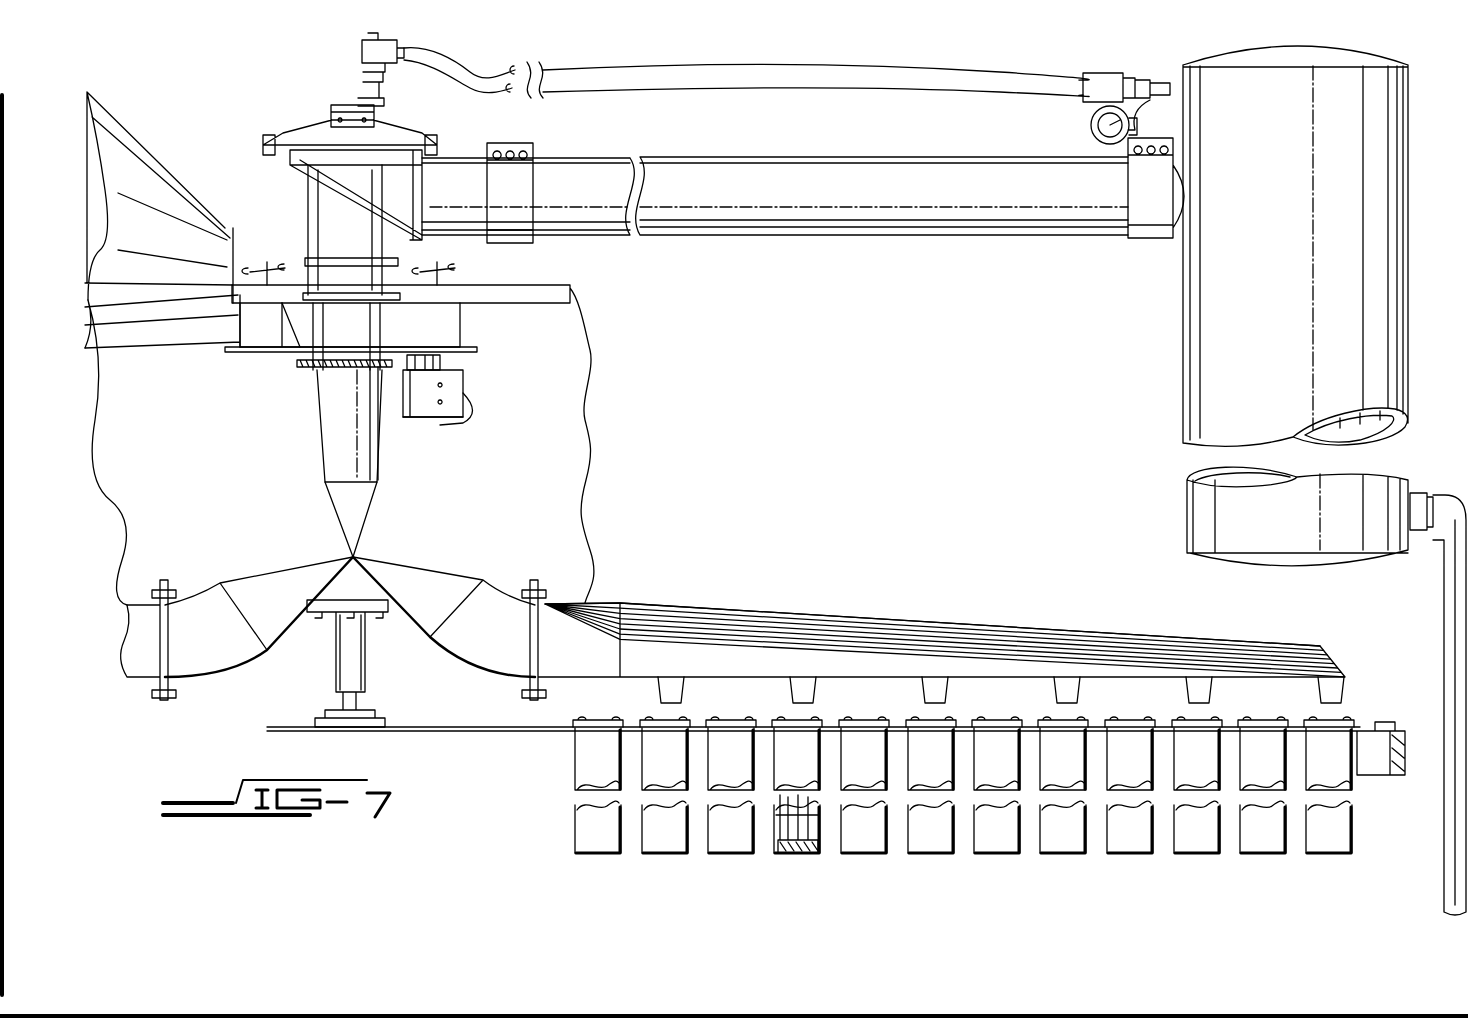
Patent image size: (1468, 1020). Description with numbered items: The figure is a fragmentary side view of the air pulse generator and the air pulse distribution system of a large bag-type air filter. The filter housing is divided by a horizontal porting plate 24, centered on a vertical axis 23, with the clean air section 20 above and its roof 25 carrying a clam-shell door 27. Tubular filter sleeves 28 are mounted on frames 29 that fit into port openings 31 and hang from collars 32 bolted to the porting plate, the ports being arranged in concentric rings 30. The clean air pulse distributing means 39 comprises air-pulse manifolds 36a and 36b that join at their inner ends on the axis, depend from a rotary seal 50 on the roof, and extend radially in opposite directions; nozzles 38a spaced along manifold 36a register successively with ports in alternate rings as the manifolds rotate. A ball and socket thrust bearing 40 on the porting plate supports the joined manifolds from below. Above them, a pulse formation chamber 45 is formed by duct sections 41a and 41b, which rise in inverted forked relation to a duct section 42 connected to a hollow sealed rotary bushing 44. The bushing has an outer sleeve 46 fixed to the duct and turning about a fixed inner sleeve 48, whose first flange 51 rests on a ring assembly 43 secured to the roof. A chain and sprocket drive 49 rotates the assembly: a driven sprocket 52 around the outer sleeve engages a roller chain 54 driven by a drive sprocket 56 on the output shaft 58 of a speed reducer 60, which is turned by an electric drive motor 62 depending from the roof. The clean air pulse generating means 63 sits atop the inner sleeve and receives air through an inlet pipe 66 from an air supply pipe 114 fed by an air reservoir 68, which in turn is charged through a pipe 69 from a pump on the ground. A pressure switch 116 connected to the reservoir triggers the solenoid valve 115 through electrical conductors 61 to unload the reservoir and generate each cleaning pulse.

The clean air section 20 is at (768, 520).
The axis 23 is at (360, 50).
The porting plate 24 is at (470, 725).
The roof 25 is at (560, 288).
The clam-shell door 27 is at (150, 180).
The filter sleeves 28 is at (778, 835).
The frame 29 is at (815, 838).
The rings 30 is at (1080, 713).
The port openings 31 is at (594, 720).
The collars 32 is at (818, 720).
The air-pulse manifold 36a is at (598, 603).
The air-pulse manifold 36b is at (150, 598).
The nozzles 38a is at (684, 695).
The clean air pulse distributing means 39 is at (835, 515).
The ball and socket thrust bearing 40 is at (327, 693).
The duct section 41a is at (415, 505).
The duct section 41b is at (285, 530).
The duct section 42 is at (315, 430).
The ring assembly 43 is at (440, 312).
The rotary bushing 44 is at (290, 372).
The pulse formation chamber 45 is at (490, 515).
The outer sleeve 46 is at (290, 330).
The inner sleeve 48 is at (280, 320).
The chain and sprocket drive 49 is at (480, 360).
The rotary seal 50 is at (262, 368).
The first flange 51 is at (300, 290).
The driven sprocket 52 is at (345, 370).
The roller chain 54 is at (385, 420).
The drive sprocket 56 is at (465, 380).
The output shaft 58 is at (418, 368).
The speed reducer 60 is at (430, 417).
The electrical conductors 61 is at (820, 84).
The electric drive motor 62 is at (470, 420).
The clean air pulse generating means 63 is at (240, 155).
The inlet pipe 66 is at (470, 160).
The air reservoir 68 is at (1180, 360).
The pipe 69 is at (1447, 605).
The air supply pipe 114 is at (870, 238).
The solenoid valve 115 is at (455, 46).
The pressure switch 116 is at (1085, 102).